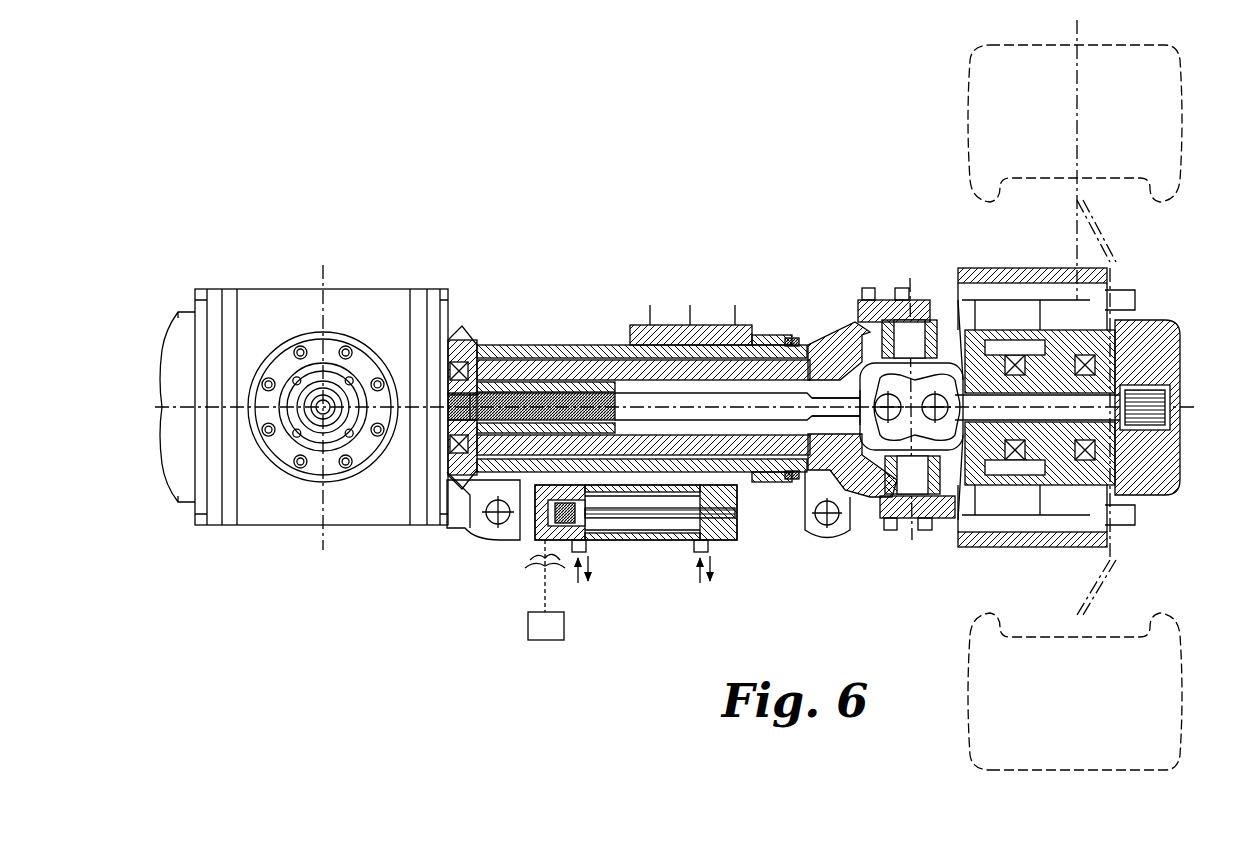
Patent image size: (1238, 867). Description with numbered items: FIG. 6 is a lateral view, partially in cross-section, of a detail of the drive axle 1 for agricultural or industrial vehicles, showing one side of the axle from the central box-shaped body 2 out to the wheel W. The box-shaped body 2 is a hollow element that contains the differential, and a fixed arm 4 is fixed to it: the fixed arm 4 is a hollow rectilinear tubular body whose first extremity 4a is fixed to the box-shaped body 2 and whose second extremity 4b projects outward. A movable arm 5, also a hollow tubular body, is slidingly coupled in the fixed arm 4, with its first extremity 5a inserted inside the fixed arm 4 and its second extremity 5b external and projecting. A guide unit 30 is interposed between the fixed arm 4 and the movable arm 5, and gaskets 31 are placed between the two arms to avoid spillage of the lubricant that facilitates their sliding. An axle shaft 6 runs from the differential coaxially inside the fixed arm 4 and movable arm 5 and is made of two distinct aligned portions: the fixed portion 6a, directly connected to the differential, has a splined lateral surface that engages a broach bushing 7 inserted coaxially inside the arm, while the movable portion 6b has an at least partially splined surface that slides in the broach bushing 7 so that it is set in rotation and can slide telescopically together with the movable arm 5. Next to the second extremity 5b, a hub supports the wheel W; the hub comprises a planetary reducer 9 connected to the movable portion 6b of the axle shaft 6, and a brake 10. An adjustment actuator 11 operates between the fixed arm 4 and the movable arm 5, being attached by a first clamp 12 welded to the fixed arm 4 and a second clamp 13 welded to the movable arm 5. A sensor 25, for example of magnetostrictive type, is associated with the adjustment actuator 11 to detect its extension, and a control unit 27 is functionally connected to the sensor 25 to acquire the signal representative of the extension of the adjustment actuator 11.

The drive axle 1 is at (280, 165).
The box-shaped body 2 is at (392, 312).
The fixed arm 4 is at (544, 343).
The first extremity of fixed arm 4a is at (462, 345).
The second extremity of fixed arm 4b is at (775, 345).
The movable arm 5 is at (595, 350).
The first extremity of movable arm 5a is at (497, 368).
The second extremity of movable arm 5b is at (853, 353).
The axle shaft 6 is at (655, 430).
The fixed portion of axle shaft 6a is at (452, 415).
The movable portion of axle shaft 6b is at (763, 415).
The broach bushing 7 is at (505, 440).
The planetary reducer 9 is at (1165, 345).
The brake 10 is at (985, 275).
The adjustment actuator 11 is at (690, 540).
The first clamp 12 is at (470, 497).
The second clamp 13 is at (848, 492).
The sensor 25 is at (565, 515).
The control unit 27 is at (545, 590).
The guide unit 30 is at (713, 345).
The gasket 31 is at (788, 340).
The wheel W is at (1160, 100).